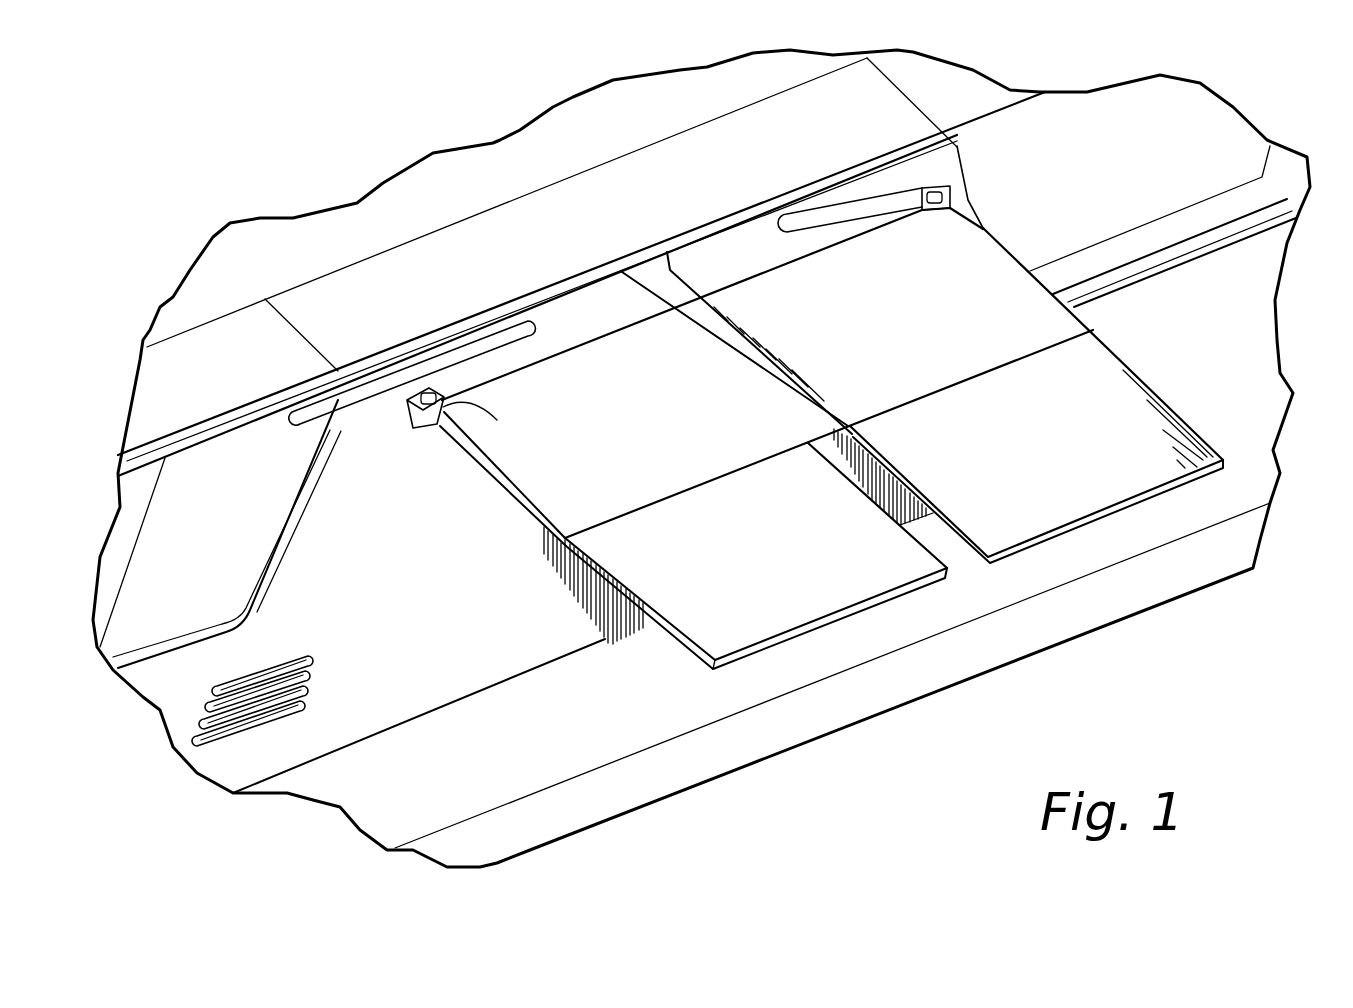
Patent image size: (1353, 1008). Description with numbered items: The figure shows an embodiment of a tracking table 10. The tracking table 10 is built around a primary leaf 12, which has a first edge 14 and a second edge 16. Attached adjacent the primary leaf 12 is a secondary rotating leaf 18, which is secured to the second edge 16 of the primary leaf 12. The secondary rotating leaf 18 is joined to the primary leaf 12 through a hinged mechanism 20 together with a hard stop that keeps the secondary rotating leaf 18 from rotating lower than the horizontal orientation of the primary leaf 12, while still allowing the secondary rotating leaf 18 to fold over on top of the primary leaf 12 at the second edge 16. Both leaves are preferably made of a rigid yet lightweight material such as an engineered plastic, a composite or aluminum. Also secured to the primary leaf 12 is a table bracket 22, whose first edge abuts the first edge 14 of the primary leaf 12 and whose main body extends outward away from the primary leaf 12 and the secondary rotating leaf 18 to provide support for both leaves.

The tracking table 10 is at (380, 566).
The primary leaf 12 is at (438, 424).
The first edge 14 is at (565, 353).
The second edge 16 is at (528, 508).
The secondary rotating leaf 18 is at (697, 597).
The hinged mechanism 20 is at (697, 487).
The table bracket 22 is at (575, 318).